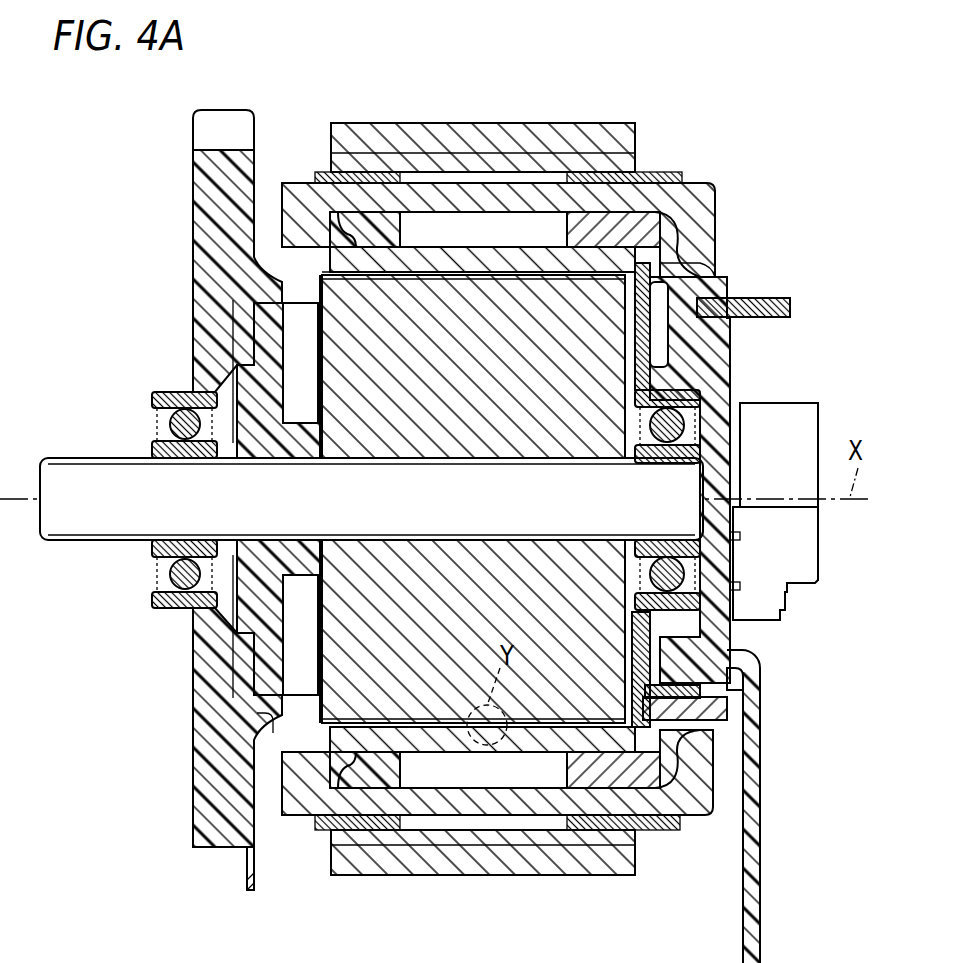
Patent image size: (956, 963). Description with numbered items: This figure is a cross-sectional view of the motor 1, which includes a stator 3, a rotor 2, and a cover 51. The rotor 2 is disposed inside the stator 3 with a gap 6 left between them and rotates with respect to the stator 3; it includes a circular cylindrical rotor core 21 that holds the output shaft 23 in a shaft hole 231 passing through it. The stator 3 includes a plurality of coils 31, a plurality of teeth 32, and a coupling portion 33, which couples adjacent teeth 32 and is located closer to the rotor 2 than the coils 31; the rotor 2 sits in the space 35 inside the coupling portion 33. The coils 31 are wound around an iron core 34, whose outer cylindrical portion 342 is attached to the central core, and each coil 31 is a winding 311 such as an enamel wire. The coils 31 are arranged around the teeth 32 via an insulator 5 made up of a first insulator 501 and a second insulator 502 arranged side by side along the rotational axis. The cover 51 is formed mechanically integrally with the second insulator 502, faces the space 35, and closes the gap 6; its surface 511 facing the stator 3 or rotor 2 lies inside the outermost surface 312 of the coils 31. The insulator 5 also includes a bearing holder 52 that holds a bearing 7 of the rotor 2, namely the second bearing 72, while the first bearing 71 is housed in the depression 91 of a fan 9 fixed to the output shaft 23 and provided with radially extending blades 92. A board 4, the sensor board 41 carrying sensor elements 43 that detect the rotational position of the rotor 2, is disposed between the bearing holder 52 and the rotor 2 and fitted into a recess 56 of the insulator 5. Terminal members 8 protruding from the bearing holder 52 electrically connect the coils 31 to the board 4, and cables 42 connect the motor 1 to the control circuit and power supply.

The motor 1 is at (278, 80).
The rotor 2 is at (548, 690).
The rotor core 21 is at (330, 298).
The output shaft 23 is at (93, 468).
The shaft hole 231 is at (468, 541).
The stator 3 is at (545, 862).
The coil 31 is at (303, 186).
The winding 311 is at (500, 195).
The outermost surface 312 is at (718, 206).
The tooth 32 is at (428, 218).
The coupling portion 33 is at (592, 742).
The iron core 34 is at (460, 258).
The space 35 is at (452, 702).
The outer cylindrical portion 342 is at (595, 135).
The board 4 is at (712, 806).
The sensor board 41 is at (660, 718).
The cables 42 is at (765, 924).
The sensor element 43 is at (652, 690).
The insulator 5 is at (498, 560).
The first insulator 501 is at (350, 783).
The second insulator 502 is at (643, 783).
The cover 51 is at (730, 283).
The surface 511 is at (672, 346).
The bearing holder 52 is at (740, 407).
The recess 56 is at (680, 262).
The gap 6 is at (522, 270).
The bearing 7 is at (468, 473).
The first bearing 71 is at (152, 390).
The second bearing 72 is at (703, 551).
The terminal member 8 is at (791, 309).
The fan 9 is at (200, 187).
The depression 91 is at (223, 652).
The blades 92 is at (193, 787).